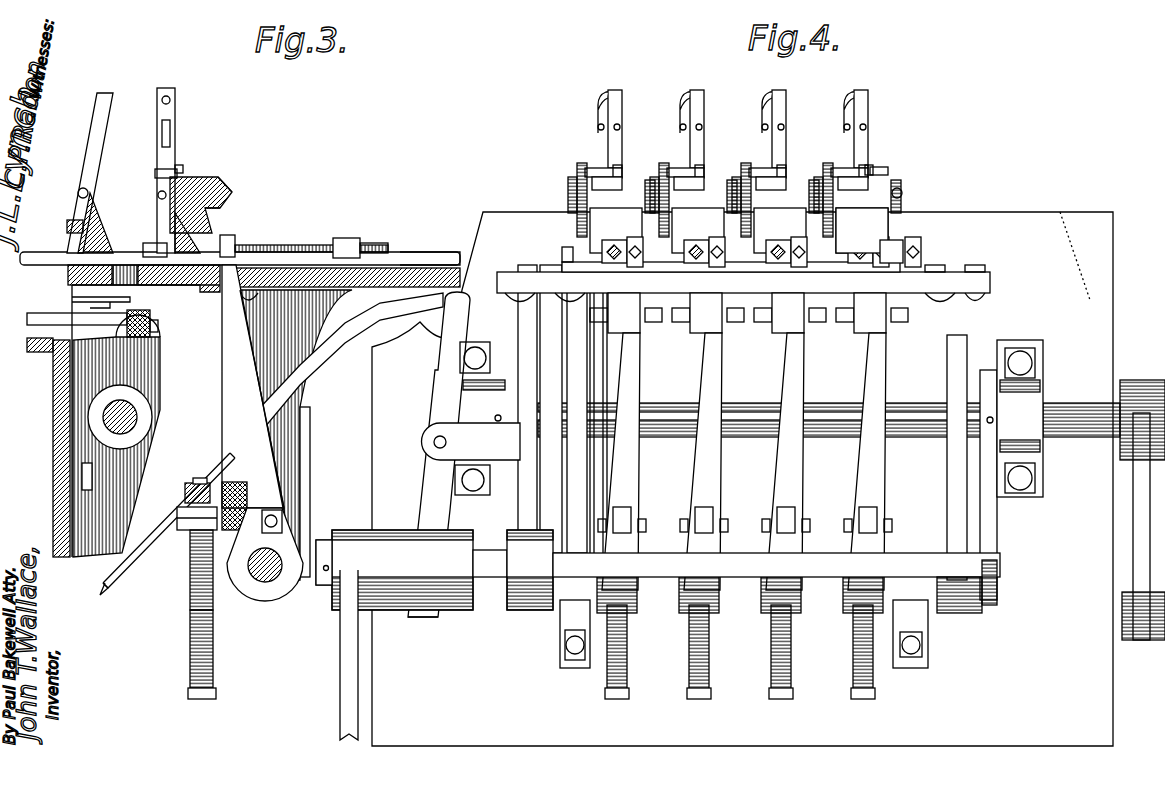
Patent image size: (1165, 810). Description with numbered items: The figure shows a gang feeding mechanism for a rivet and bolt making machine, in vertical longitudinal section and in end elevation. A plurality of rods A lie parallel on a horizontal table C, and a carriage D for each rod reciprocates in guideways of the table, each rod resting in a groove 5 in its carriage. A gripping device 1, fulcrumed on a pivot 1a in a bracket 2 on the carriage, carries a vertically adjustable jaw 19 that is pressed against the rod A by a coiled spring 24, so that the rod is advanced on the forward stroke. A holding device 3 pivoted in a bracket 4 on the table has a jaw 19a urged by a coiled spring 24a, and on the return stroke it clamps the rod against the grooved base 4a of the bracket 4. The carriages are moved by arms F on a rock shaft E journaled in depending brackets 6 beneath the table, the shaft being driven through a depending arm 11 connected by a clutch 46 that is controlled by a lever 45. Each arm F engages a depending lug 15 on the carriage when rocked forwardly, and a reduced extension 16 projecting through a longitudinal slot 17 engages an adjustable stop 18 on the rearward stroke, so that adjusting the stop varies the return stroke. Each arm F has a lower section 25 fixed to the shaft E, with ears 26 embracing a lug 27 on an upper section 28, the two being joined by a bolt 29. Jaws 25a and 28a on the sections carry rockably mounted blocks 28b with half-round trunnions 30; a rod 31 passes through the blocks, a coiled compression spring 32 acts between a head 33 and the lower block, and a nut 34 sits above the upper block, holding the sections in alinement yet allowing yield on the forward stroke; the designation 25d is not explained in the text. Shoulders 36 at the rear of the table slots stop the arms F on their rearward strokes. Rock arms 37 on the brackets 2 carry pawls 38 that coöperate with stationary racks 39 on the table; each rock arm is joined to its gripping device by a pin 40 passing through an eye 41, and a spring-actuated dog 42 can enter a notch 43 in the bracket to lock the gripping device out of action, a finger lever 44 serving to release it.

In FIG. 3, the gripping device 1 is at (157, 143).
In FIG. 4, the gripping device 1 is at (622, 143).
In FIG. 3, the pivot 1a is at (158, 196).
In FIG. 4, the pivot 1a is at (905, 194).
In FIG. 3, the bracket 2 is at (201, 215).
In FIG. 4, the bracket 2 is at (812, 175).
In FIG. 3, the holding device 3 is at (106, 120).
In FIG. 3, the bracket 4 is at (82, 197).
In FIG. 3, the grooved base 4a is at (68, 280).
In FIG. 4, the groove 5 is at (620, 258).
In FIG. 3, the depending brackets 6 is at (300, 440).
In FIG. 4, the depending brackets 6 is at (527, 500).
In FIG. 3, the depending arm 11 is at (203, 470).
In FIG. 3, the depending lug 15 is at (210, 286).
In FIG. 3, the reduced extension 16 is at (235, 243).
In FIG. 4, the reduced extension 16 is at (890, 244).
In FIG. 3, the longitudinal slot 17 is at (302, 245).
In FIG. 3, the adjustable stop 18 is at (365, 240).
In FIG. 4, the adjustable stop 18 is at (915, 250).
In FIG. 3, the jaw 19 is at (146, 243).
In FIG. 4, the jaw 19 is at (698, 230).
In FIG. 3, the jaw 19a is at (67, 228).
In FIG. 3, the coiled spring 24 is at (178, 174).
In FIG. 4, the coiled spring 24 is at (628, 172).
In FIG. 3, the coiled spring 24a is at (88, 192).
In FIG. 3, the lower section 25 is at (240, 600).
In FIG. 4, the lower section 25 is at (866, 310).
In FIG. 3, the jaws 25a is at (162, 550).
In FIG. 3, the bar end 25d is at (127, 591).
In FIG. 3, the ears 26 is at (284, 522).
In FIG. 4, the ears 26 is at (785, 512).
In FIG. 3, the lug 27 is at (305, 505).
In FIG. 4, the lug 27 is at (702, 510).
In FIG. 3, the upper section 28 is at (226, 438).
In FIG. 3, the jaws 28a is at (185, 490).
In FIG. 3, the block 28b is at (177, 512).
In FIG. 3, the bolt 29 is at (270, 508).
In FIG. 4, the bolt 29 is at (815, 520).
In FIG. 3, the half-round trunnions 30 is at (240, 490).
In FIG. 3, the rod 31 is at (190, 618).
In FIG. 4, the rod 31 is at (858, 640).
In FIG. 3, the coiled compression spring 32 is at (190, 656).
In FIG. 4, the coiled compression spring 32 is at (770, 640).
In FIG. 3, the head 33 is at (216, 692).
In FIG. 4, the head 33 is at (688, 692).
In FIG. 3, the nut 34 is at (236, 462).
In FIG. 3, the shoulders 36 is at (360, 352).
In FIG. 3, the rock arms 37 is at (228, 190).
In FIG. 4, the rock arms 37 is at (568, 189).
In FIG. 3, the pawls 38 is at (222, 206).
In FIG. 4, the pawls 38 is at (577, 226).
In FIG. 4, the stationary racks 39 is at (562, 250).
In FIG. 4, the pin 40 is at (880, 172).
In FIG. 3, the eye 41 is at (185, 168).
In FIG. 4, the eye 41 is at (873, 168).
In FIG. 3, the spring-actuated dog 42 is at (172, 140).
In FIG. 4, the spring-actuated dog 42 is at (600, 150).
In FIG. 4, the notch 43 is at (616, 230).
In FIG. 3, the finger lever 44 is at (172, 99).
In FIG. 4, the finger lever 44 is at (770, 99).
In FIG. 4, the lever 45 is at (435, 388).
In FIG. 4, the clutch 46 is at (412, 617).
In FIG. 3, the rods A is at (455, 252).
In FIG. 4, the rods A is at (730, 275).
In FIG. 3, the table C is at (420, 262).
In FIG. 4, the table C is at (990, 282).
In FIG. 4, the carriages D is at (805, 274).
In FIG. 3, the rock shaft E is at (270, 584).
In FIG. 4, the rock shaft E is at (488, 612).
In FIG. 3, the arms F is at (226, 384).
In FIG. 4, the arms F is at (684, 378).